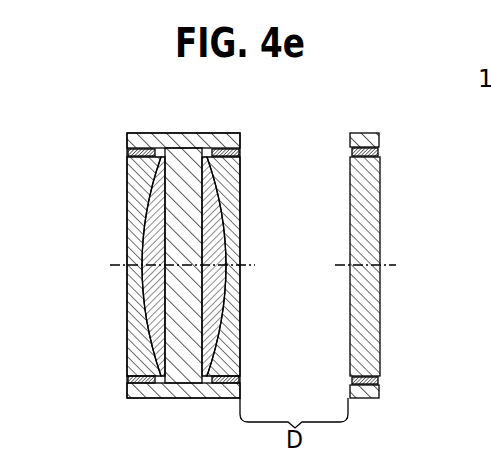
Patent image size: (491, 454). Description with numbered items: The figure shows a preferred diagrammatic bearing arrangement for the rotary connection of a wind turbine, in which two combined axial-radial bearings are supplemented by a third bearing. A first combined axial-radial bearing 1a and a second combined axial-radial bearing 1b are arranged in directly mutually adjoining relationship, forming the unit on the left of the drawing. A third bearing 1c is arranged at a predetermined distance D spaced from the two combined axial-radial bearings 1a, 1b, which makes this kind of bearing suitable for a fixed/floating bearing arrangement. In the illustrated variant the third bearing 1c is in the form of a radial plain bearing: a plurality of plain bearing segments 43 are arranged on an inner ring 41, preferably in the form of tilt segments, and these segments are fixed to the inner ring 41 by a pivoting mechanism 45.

The first combined axial-radial bearing 1a is at (156, 126).
The second combined axial-radial bearing 1b is at (211, 126).
The third bearing 1c is at (367, 245).
The inner ring 41 is at (362, 182).
The plain bearing segments 43 is at (352, 152).
The pivoting mechanism 45 is at (366, 132).